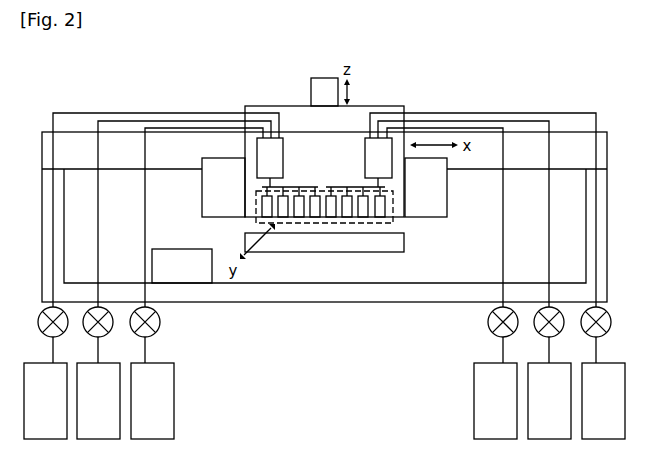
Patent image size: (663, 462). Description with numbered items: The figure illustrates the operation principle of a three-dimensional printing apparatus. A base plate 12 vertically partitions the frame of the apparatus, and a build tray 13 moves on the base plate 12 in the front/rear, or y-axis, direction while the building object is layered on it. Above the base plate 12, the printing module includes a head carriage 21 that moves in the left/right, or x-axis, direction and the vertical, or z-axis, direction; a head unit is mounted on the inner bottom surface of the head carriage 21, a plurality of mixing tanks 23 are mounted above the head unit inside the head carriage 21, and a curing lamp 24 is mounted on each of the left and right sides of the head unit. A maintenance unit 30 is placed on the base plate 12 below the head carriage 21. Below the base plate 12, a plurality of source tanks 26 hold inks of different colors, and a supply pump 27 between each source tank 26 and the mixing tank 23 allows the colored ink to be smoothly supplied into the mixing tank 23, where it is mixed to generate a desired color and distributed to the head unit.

The base plate 12 is at (362, 293).
The build tray 13 is at (398, 242).
The head carriage 21 is at (367, 107).
The mixing tank 23 is at (283, 152).
The curing lamp 24 is at (438, 195).
The source tank 26 is at (168, 402).
The supply pump 27 is at (161, 325).
The maintenance unit 30 is at (205, 270).